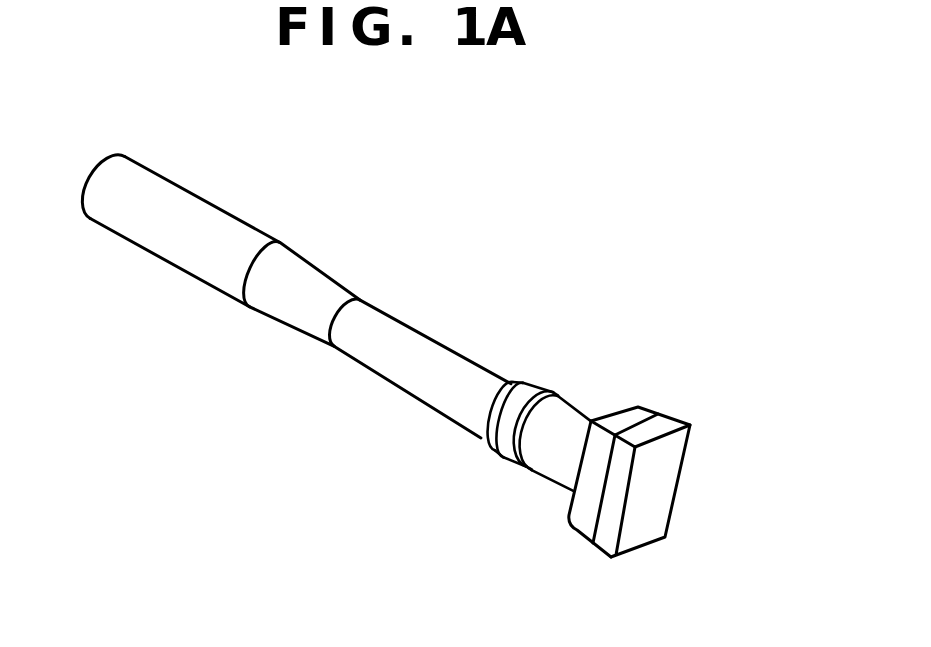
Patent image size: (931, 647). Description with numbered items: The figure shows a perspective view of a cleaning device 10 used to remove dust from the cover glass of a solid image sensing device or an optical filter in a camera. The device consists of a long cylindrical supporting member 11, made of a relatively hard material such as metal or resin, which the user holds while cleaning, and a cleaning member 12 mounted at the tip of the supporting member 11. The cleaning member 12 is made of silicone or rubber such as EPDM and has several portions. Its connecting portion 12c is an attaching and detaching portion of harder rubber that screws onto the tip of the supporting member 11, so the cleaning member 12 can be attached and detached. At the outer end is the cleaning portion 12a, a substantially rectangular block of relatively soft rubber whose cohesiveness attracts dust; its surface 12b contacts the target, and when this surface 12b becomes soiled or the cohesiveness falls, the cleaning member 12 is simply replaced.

The cleaning device 10 is at (80, 116).
The cylindrical supporting member 11 is at (494, 499).
The cleaning member 12 is at (630, 463).
The cleaning portion 12a is at (653, 408).
The surface of the cleaning portion 12b is at (660, 494).
The connecting portion 12c is at (568, 421).